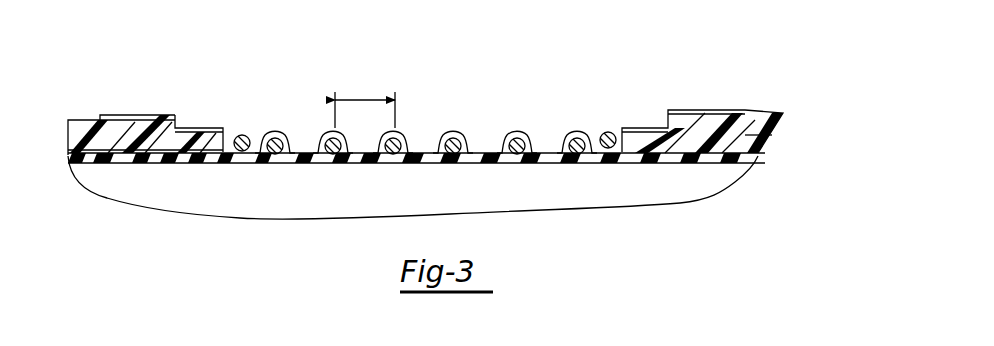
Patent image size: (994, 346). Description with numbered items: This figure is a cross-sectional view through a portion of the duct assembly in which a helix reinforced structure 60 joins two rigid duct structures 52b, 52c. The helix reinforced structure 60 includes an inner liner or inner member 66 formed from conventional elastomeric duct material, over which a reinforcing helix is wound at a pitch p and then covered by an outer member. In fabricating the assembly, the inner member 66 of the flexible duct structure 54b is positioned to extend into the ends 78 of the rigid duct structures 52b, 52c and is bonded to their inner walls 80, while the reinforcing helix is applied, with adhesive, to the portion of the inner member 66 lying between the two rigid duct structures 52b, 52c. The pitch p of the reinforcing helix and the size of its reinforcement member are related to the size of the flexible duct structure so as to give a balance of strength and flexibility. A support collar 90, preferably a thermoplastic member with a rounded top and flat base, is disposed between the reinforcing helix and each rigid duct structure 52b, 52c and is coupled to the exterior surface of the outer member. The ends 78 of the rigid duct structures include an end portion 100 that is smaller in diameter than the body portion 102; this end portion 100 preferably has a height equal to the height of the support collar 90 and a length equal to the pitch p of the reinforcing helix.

The rigid duct structure 52b is at (760, 135).
The rigid duct structure 52c is at (152, 147).
The flexible duct structure 54b is at (462, 108).
The helix reinforced structure 60 is at (545, 107).
The inner member 66 is at (552, 153).
The ends 78 is at (122, 140).
The inner walls 80 is at (728, 160).
The support collar 90 is at (612, 125).
The end portion 100 is at (185, 147).
The body portion 102 is at (75, 132).
The pitch p is at (365, 101).